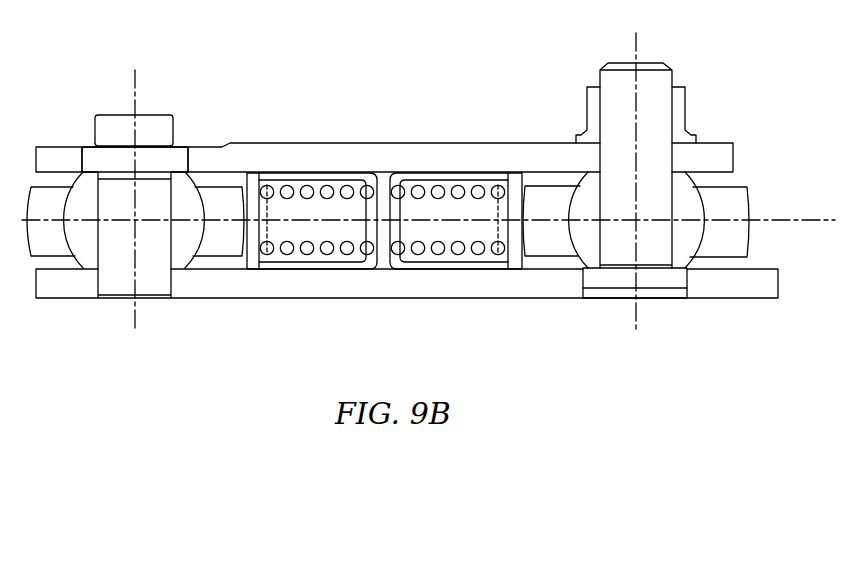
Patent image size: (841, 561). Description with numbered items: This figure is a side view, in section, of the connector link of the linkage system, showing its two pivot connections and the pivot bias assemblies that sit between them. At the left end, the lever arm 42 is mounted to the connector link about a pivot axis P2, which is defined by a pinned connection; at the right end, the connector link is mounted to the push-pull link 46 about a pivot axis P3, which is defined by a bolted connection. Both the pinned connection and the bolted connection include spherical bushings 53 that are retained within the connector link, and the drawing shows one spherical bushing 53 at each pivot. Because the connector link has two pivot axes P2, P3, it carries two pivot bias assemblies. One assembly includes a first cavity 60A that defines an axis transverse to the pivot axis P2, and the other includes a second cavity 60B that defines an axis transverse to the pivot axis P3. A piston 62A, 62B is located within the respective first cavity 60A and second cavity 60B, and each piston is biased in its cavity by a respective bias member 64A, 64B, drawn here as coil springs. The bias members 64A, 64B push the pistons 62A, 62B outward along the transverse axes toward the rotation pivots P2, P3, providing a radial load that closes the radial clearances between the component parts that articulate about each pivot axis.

The pivot axis P2 is at (137, 93).
The pivot axis P3 is at (638, 45).
The lever arm 42 is at (52, 246).
The spherical bushing 53 is at (185, 249).
The push-pull link 46 is at (742, 199).
The piston 62A is at (284, 178).
The first cavity 60A is at (367, 177).
The bias member 64A is at (308, 254).
The piston 62B is at (482, 178).
The second cavity 60B is at (397, 177).
The bias member 64B is at (453, 254).